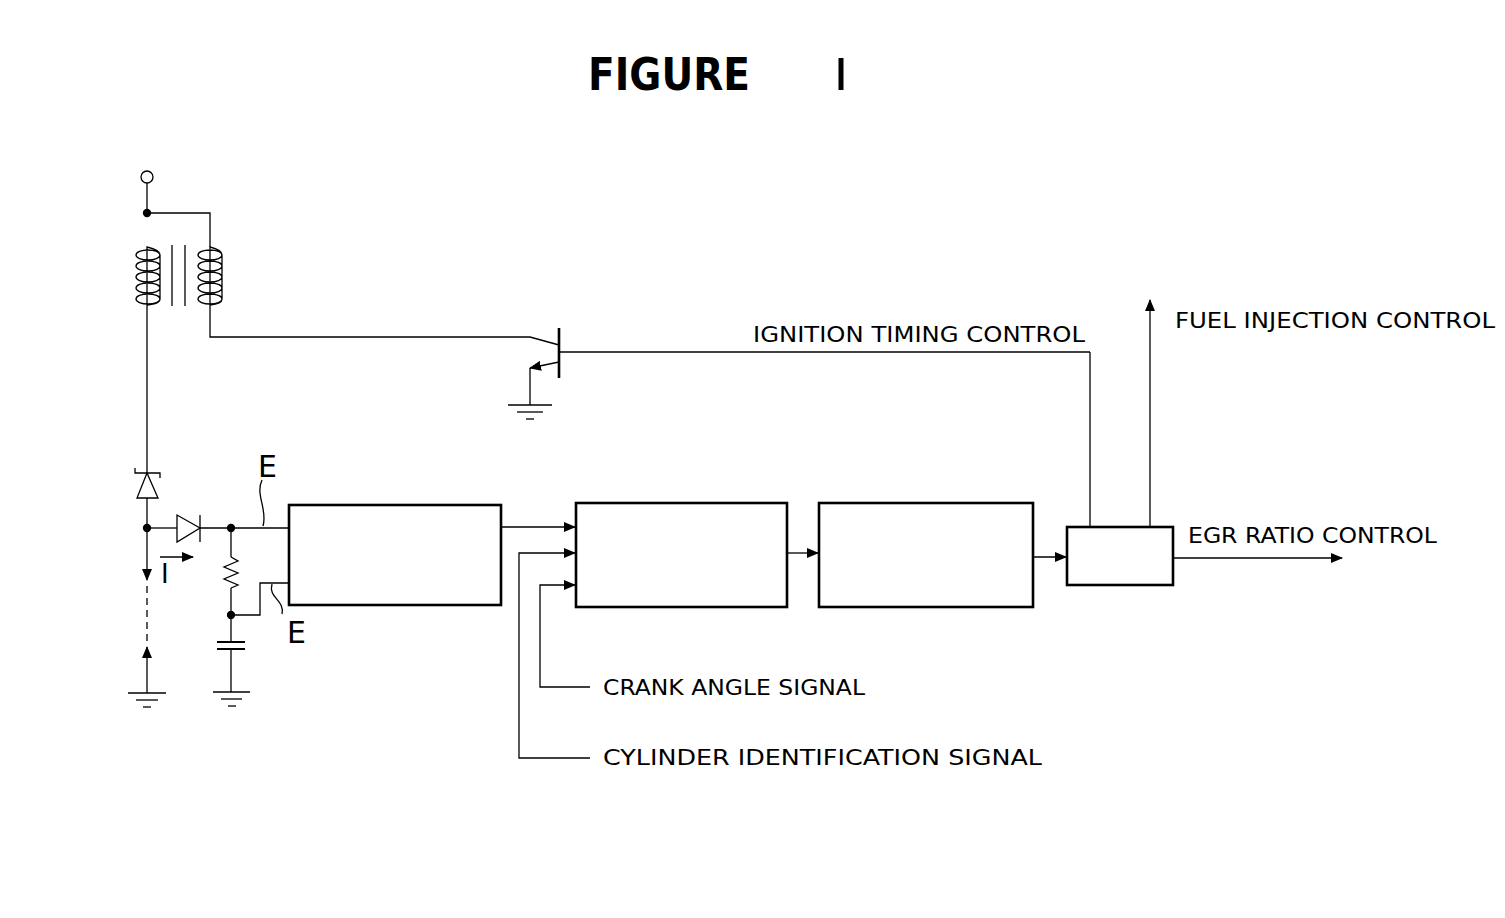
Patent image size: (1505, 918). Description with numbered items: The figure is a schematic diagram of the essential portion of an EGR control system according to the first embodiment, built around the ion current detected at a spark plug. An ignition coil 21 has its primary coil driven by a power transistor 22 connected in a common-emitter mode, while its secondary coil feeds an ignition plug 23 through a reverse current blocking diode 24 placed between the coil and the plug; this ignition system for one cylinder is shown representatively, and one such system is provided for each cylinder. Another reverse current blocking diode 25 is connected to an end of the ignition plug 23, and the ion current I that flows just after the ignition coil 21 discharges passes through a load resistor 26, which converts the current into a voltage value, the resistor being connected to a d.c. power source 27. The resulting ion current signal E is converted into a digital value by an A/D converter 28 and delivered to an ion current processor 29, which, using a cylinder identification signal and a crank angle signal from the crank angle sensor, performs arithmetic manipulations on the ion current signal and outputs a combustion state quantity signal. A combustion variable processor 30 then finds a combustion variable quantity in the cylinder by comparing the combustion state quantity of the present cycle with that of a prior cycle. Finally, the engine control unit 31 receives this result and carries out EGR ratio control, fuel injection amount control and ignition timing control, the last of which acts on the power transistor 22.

The ignition coil 21 is at (220, 277).
The power transistor 22 is at (560, 330).
The ignition plug 23 is at (153, 629).
The reverse current blocking diode 24 is at (170, 481).
The reverse current blocking diode 25 is at (184, 513).
The load resistor 26 is at (218, 575).
The d.c. power source 27 is at (253, 646).
The A/D converter 28 is at (397, 503).
The ion current processor 29 is at (677, 503).
The combustion variable processor 30 is at (912, 503).
The engine control unit 31 is at (1110, 586).